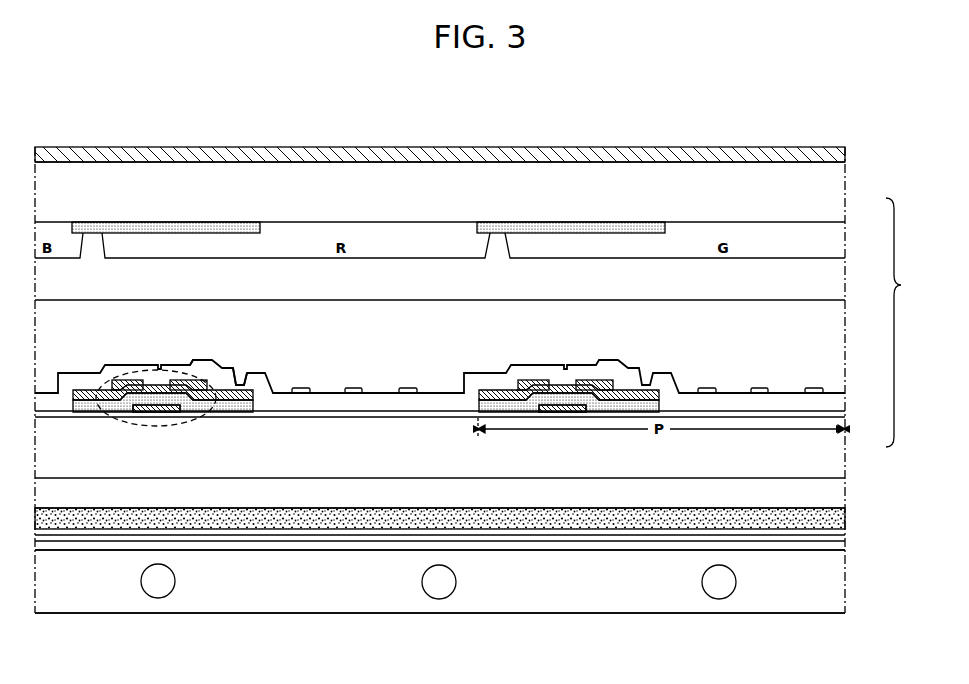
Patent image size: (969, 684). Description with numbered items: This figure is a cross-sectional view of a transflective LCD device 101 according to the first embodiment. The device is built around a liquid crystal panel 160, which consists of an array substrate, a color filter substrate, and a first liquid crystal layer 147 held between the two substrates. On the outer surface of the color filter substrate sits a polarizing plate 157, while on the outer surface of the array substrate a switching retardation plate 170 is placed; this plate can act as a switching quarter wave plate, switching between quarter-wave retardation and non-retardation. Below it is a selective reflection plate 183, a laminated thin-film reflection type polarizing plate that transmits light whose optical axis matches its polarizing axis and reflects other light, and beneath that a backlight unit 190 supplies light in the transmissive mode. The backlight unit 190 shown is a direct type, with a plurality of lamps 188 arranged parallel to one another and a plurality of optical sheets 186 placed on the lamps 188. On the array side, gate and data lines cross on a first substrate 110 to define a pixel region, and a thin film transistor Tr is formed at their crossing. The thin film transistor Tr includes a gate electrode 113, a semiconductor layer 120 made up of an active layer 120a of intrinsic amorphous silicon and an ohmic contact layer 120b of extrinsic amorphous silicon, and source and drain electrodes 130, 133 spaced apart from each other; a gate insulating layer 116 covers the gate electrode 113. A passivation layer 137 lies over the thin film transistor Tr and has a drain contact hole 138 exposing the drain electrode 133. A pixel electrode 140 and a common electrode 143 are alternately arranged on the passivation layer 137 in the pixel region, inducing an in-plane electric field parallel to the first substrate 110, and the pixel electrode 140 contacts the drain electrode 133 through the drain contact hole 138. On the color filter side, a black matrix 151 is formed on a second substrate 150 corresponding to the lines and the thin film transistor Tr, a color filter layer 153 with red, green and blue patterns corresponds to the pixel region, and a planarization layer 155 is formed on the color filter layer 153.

The transflective LCD device 101 is at (603, 106).
The polarizing plate 157 is at (846, 156).
The second substrate 150 is at (833, 191).
The black matrix 151 is at (580, 224).
The color filter layer 153 is at (563, 252).
The planarization layer 155 is at (668, 294).
The liquid crystal panel 160 is at (909, 322).
The first liquid crystal layer 147 is at (832, 353).
The active layer 120a is at (214, 408).
The ohmic contact layer 120b is at (236, 404).
The semiconductor layer 120 is at (226, 461).
The gate electrode 113 is at (172, 414).
The source electrode 130 is at (133, 378).
The drain electrode 133 is at (174, 378).
The thin film transistor Tr is at (159, 428).
The passivation layer 137 is at (438, 392).
The drain contact hole 138 is at (241, 362).
The pixel electrode 140 is at (355, 386).
The common electrode 143 is at (408, 386).
The buffer layer 116 is at (303, 414).
The first substrate 110 is at (838, 451).
The switching retardation plate 170 is at (835, 492).
The selective reflection plate 183 is at (840, 519).
The optical sheets 186 is at (849, 529).
The backlight unit 190 is at (884, 541).
The lamps 188 is at (719, 583).